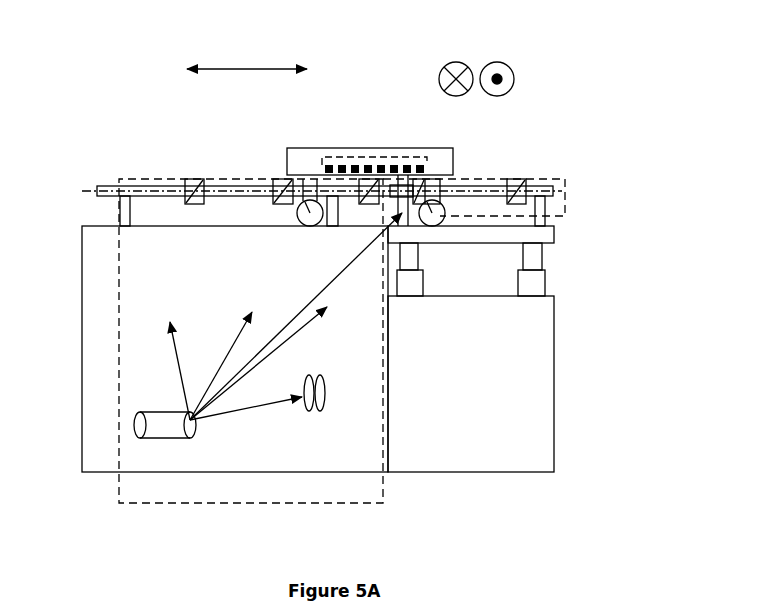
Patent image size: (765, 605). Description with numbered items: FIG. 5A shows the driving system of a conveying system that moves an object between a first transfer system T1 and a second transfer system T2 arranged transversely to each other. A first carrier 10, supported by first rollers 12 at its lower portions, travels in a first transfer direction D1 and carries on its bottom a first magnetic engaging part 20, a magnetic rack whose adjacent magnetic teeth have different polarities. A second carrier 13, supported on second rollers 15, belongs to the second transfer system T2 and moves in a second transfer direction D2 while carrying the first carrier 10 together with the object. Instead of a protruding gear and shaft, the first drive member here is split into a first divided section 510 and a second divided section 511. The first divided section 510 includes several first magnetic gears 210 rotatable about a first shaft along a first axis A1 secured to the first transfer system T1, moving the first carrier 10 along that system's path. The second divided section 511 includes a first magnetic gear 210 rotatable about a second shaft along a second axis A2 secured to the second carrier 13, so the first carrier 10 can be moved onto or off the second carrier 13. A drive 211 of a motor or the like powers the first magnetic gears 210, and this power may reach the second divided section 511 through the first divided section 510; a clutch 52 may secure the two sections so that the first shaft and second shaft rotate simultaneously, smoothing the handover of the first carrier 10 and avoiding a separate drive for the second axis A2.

The first carrier 10 is at (305, 148).
The first magnetic engaging part 20 is at (415, 162).
The first rollers 12 is at (298, 199).
The second carrier 13 is at (487, 236).
The second rollers 15 is at (412, 282).
The clutch 52 is at (320, 405).
The first magnetic gear 210 is at (203, 205).
The drive 211 is at (165, 430).
The first divided section 510 is at (190, 502).
The second divided section 511 is at (565, 212).
The first transfer direction D1 is at (247, 53).
The second transfer direction D2 is at (476, 57).
The first transfer system T1 is at (112, 287).
The second transfer system T2 is at (540, 407).
The first axis A1 is at (185, 201).
The second axis A2 is at (452, 188).